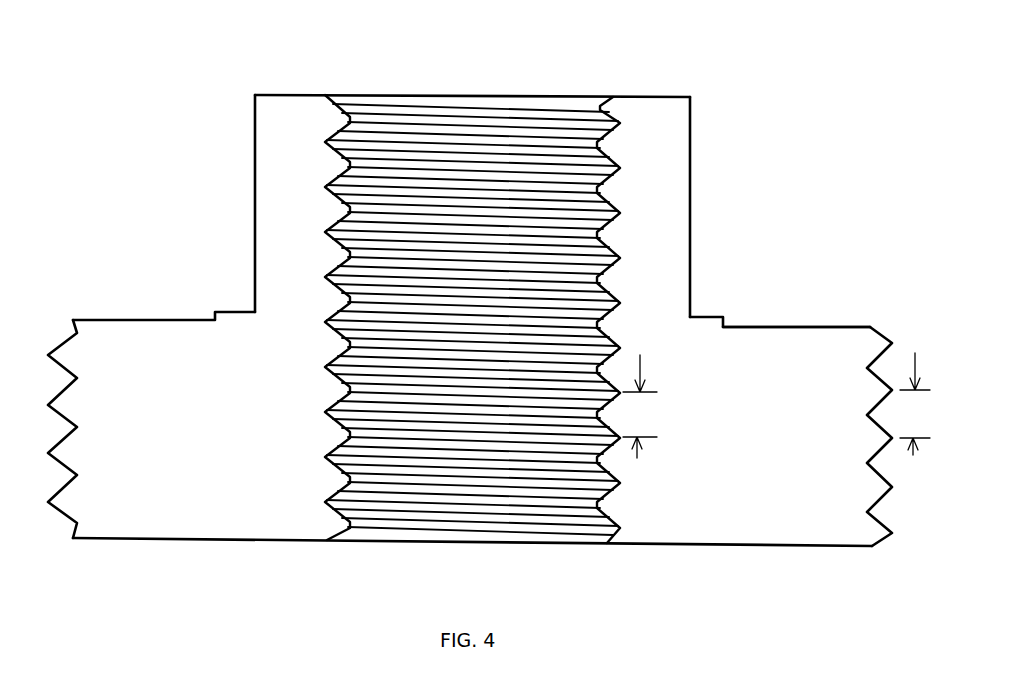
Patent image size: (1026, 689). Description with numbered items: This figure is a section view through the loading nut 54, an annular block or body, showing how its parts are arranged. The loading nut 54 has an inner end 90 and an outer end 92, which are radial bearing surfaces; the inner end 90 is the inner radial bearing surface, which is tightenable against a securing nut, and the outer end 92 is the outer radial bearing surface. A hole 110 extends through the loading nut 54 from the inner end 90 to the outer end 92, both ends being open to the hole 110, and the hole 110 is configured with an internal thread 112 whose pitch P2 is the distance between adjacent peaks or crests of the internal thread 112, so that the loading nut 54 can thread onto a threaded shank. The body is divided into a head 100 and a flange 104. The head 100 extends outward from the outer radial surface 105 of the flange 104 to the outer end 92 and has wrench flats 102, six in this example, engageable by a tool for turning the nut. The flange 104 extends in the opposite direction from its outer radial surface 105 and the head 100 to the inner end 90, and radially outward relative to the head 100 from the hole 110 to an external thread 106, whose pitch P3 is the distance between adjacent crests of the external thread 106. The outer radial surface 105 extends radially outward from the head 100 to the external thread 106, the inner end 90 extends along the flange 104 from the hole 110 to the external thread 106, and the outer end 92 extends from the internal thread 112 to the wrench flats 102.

The loading nut 54 is at (697, 147).
The inner end 90 is at (750, 547).
The outer end 92 is at (660, 97).
The head 100 is at (675, 196).
The wrench flats 102 is at (255, 182).
The flange 104 is at (820, 352).
The outer radial surface 105 is at (785, 327).
The external thread 106 is at (52, 502).
The hole 110 is at (472, 503).
The internal thread 112 is at (367, 162).
The pitch P2 is at (637, 458).
The pitch P3 is at (913, 455).